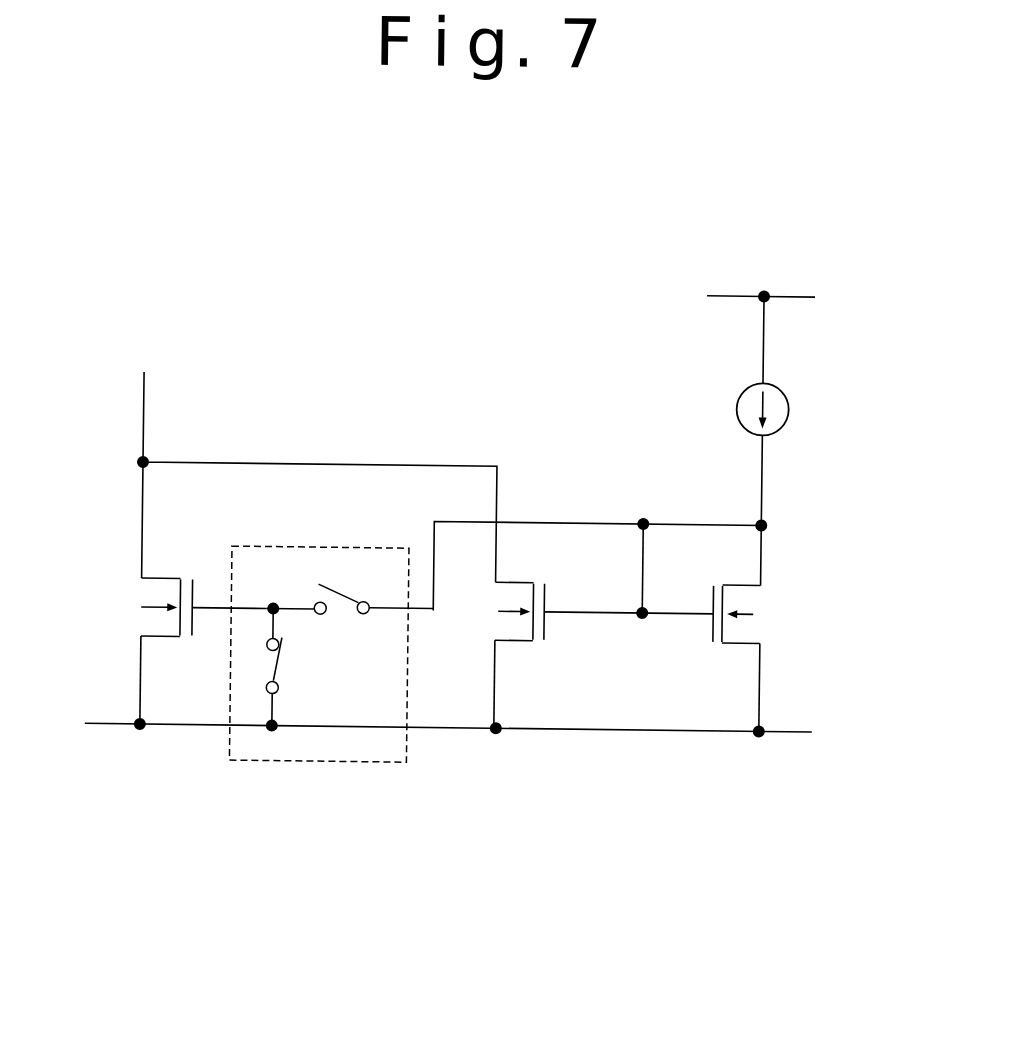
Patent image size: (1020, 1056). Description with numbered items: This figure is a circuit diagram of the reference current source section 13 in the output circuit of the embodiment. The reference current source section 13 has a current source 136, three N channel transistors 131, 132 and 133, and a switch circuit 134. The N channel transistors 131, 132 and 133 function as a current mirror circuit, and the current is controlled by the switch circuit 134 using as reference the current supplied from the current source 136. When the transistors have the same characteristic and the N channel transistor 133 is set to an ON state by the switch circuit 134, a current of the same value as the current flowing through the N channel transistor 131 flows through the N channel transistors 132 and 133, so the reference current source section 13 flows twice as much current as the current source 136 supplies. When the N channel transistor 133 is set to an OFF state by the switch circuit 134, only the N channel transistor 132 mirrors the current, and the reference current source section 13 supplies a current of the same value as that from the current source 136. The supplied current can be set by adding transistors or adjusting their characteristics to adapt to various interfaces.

The reference current source section 13 is at (351, 295).
The N channel transistor 131 is at (755, 607).
The N channel transistor 132 is at (521, 640).
The N channel transistor 133 is at (138, 607).
The switch circuit 134 is at (331, 761).
The current source 136 is at (788, 402).